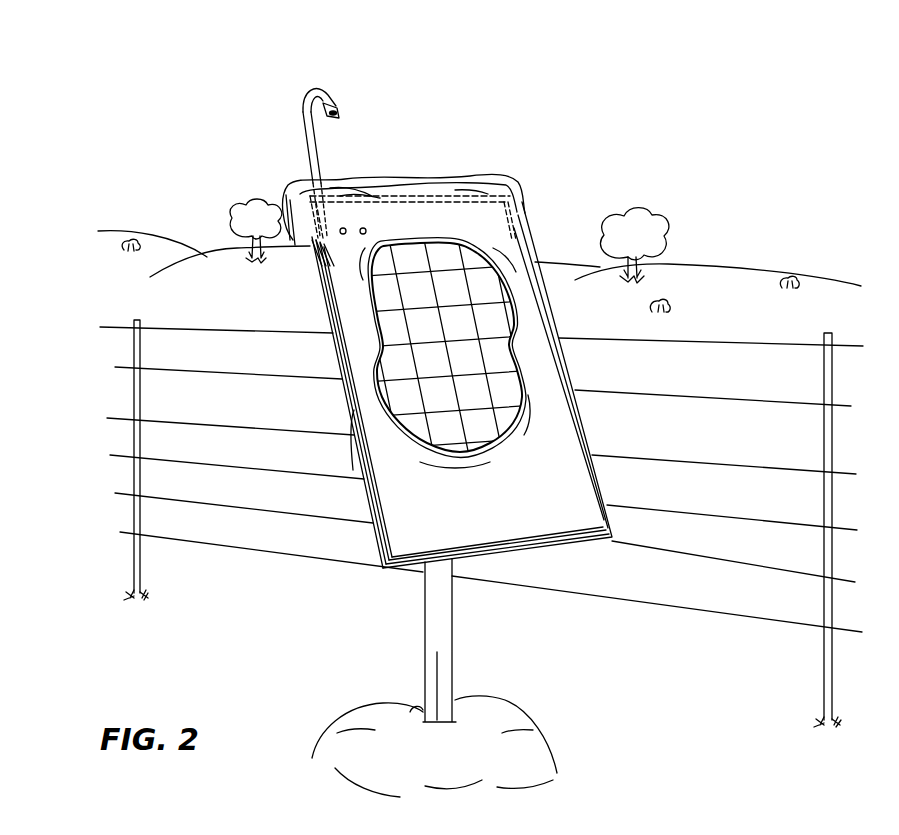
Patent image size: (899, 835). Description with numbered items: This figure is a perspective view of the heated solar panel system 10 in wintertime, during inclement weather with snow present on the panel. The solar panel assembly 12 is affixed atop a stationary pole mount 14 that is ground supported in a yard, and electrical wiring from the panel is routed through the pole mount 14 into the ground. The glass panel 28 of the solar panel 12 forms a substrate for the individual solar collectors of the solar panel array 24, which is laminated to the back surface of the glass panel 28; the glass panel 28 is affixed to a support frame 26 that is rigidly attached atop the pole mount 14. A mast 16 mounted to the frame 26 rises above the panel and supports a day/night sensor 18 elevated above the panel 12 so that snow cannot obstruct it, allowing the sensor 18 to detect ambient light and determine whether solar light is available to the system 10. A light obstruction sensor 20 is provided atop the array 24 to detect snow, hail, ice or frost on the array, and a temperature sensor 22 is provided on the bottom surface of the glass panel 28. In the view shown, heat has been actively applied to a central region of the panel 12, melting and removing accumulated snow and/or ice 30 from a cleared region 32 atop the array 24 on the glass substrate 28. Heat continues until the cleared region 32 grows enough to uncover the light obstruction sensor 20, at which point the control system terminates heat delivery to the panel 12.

The heated solar panel system 10 is at (574, 112).
The solar panel assembly 12 is at (520, 218).
The pole mount 14 is at (445, 677).
The mast 16 is at (312, 88).
The day/night sensor 18 is at (338, 112).
The light obstruction sensor 20 is at (340, 227).
The temperature sensor 22 is at (363, 227).
The solar panel array 24 is at (432, 332).
The support frame 26 is at (346, 397).
The glass panel 28 is at (453, 403).
The accumulated snow and/or ice 30 is at (468, 178).
The cleared region 32 is at (448, 428).